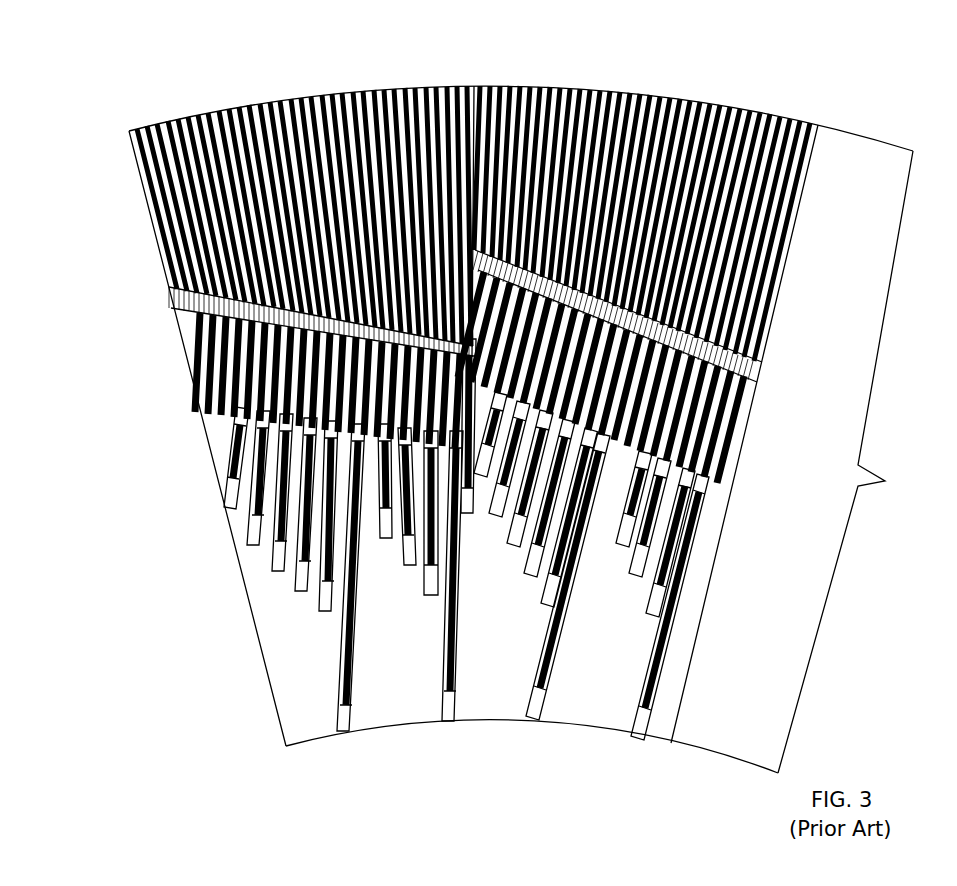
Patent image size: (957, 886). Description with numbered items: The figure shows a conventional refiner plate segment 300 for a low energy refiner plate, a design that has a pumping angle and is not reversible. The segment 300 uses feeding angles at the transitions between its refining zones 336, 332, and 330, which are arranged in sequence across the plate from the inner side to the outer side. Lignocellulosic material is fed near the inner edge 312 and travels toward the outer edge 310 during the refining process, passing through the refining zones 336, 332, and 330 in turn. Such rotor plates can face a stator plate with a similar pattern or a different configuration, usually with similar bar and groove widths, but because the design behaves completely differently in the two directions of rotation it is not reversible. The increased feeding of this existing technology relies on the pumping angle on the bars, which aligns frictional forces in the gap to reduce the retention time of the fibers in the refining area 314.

The refiner plate segment 300 is at (125, 115).
The outer edge 310 is at (751, 104).
The inner edge 312 is at (573, 723).
The refining area 314 is at (860, 462).
The refining zone 330 is at (833, 122).
The refining zone 332 is at (760, 376).
The refining zone 336 is at (733, 487).